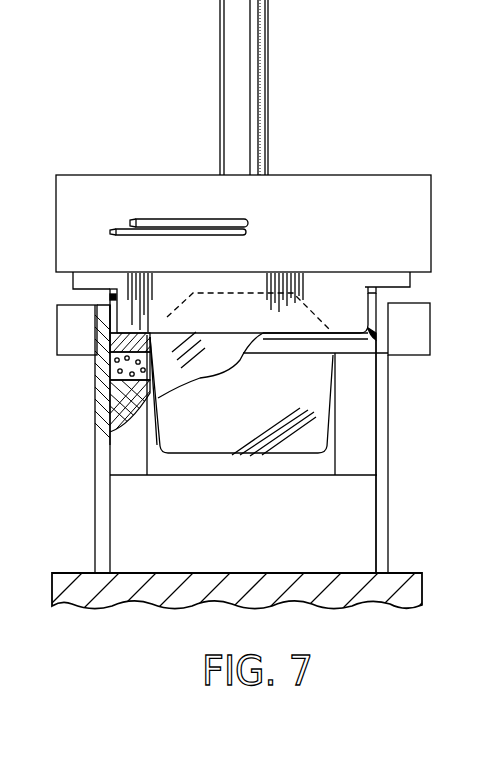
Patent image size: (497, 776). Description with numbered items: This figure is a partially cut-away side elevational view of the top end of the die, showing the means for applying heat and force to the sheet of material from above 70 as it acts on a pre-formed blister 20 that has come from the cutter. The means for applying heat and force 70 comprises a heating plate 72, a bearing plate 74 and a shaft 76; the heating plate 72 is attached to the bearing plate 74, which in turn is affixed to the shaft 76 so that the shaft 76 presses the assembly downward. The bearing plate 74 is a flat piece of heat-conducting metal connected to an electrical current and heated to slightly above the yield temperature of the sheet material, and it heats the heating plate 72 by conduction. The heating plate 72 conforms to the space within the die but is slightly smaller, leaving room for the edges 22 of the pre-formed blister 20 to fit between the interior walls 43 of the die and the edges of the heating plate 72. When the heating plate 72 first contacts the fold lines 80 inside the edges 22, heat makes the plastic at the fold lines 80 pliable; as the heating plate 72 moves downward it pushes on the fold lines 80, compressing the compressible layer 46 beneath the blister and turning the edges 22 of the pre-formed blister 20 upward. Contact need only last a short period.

The pre-formed blister 20 is at (213, 458).
The edges of the pre-formed blister 22 is at (118, 293).
The interior walls of the die 43 is at (133, 303).
The compressible layer 46 is at (118, 363).
The means for applying heat and force to the sheet of material from above 70 is at (303, 152).
The heating plate 72 is at (225, 280).
The bearing plate 74 is at (392, 183).
The shaft 76 is at (233, 94).
The fold lines 80 is at (110, 337).